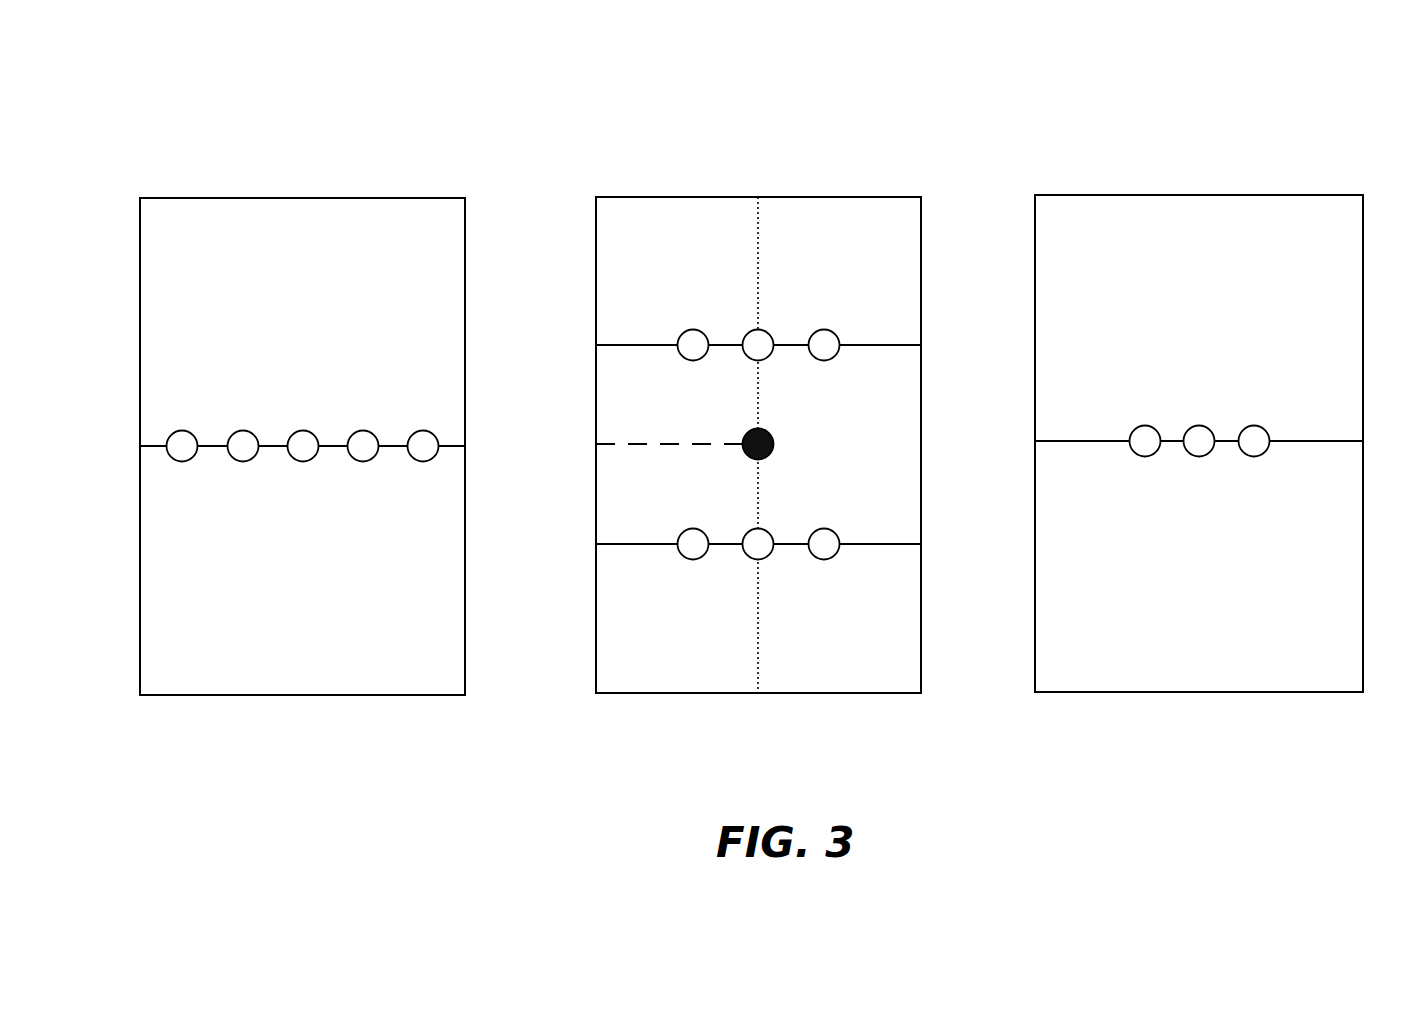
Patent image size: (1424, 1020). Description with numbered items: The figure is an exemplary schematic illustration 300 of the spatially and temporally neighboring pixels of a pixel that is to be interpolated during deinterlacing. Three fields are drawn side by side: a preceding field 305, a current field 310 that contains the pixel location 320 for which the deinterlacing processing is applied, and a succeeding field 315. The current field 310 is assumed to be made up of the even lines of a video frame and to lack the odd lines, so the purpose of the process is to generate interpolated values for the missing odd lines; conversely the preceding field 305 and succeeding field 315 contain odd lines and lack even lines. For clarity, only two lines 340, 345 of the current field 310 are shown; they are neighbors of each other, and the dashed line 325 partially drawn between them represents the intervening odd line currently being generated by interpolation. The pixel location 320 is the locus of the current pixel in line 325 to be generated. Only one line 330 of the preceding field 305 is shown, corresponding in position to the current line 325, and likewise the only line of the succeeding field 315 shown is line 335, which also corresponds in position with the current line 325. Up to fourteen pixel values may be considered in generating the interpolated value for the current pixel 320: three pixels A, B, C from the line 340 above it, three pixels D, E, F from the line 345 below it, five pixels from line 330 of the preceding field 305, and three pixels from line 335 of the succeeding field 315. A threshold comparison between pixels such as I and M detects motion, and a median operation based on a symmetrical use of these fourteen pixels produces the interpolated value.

The schematic illustration 300 is at (150, 56).
The preceding field (n-1) 305 is at (405, 198).
The current field (n) 310 is at (870, 197).
The succeeding field (n+1) 315 is at (1297, 195).
The pixel location 320 is at (773, 432).
The dashed line 325 is at (633, 444).
The line of preceding field 330 is at (450, 447).
The line of succeeding field 335 is at (1069, 443).
The line (k-1) 340 is at (872, 345).
The line (k+1) 345 is at (647, 545).